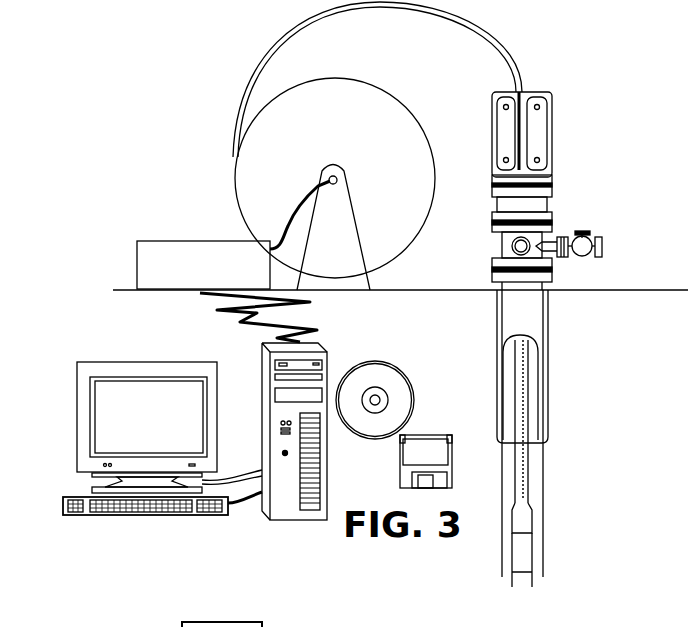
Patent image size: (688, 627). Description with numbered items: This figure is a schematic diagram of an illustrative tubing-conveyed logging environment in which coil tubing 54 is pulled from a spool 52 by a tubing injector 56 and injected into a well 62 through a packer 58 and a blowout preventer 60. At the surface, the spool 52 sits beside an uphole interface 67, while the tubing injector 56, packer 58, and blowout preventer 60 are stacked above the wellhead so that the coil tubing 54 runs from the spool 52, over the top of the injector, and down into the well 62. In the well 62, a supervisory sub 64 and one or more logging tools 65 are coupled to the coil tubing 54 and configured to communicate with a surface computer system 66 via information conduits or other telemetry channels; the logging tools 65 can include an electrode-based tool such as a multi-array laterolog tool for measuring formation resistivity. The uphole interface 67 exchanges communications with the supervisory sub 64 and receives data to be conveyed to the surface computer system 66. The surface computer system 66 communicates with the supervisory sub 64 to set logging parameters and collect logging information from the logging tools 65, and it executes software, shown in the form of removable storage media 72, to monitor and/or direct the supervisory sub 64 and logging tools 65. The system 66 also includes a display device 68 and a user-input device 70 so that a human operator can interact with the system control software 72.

The spool 52 is at (333, 148).
The coil tubing 54 is at (276, 60).
The tubing injector 56 is at (553, 118).
The packer 58 is at (548, 201).
The blowout preventer 60 is at (500, 246).
The well 62 is at (544, 333).
The supervisory sub 64 is at (533, 518).
The logging tools 65 is at (532, 558).
The surface computer system 66 is at (262, 450).
The uphole interface 67 is at (180, 239).
The display device 68 is at (85, 473).
The user-input device 70 is at (85, 516).
The removable storage media 72 is at (400, 445).